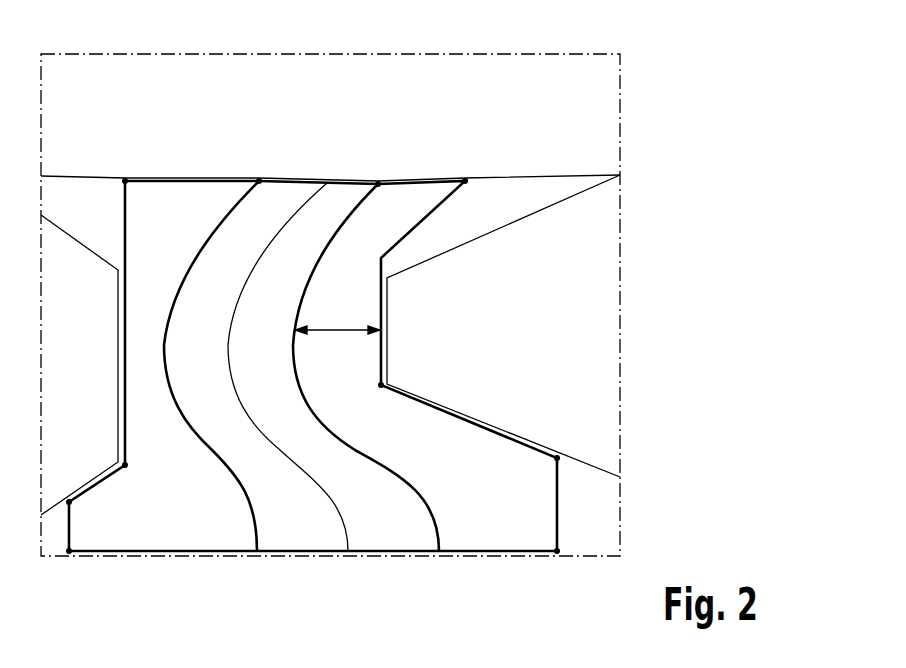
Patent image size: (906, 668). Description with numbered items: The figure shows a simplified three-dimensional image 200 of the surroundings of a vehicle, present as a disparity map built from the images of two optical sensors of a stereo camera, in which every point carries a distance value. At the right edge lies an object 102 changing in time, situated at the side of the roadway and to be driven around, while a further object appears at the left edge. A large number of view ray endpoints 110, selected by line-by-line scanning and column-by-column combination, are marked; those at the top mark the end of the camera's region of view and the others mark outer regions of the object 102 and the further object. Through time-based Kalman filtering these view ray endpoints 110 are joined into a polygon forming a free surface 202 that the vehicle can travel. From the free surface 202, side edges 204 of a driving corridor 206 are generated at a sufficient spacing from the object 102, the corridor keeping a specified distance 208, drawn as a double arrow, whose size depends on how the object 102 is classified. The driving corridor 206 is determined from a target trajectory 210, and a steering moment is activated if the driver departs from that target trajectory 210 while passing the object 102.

The object 102 is at (600, 318).
The view ray endpoints 110 is at (125, 181).
The three-dimensional image 200 is at (621, 95).
The free surface 202 is at (557, 497).
The side edges 204 is at (435, 490).
The driving corridor 206 is at (303, 537).
The specified distance 208 is at (340, 333).
The target trajectory 210 is at (350, 537).